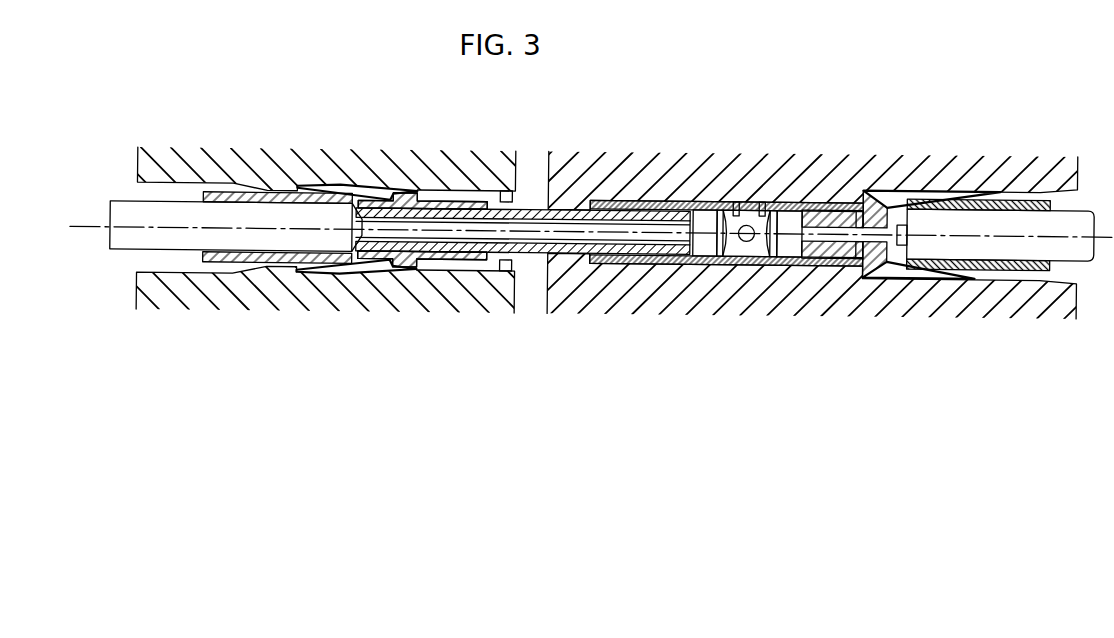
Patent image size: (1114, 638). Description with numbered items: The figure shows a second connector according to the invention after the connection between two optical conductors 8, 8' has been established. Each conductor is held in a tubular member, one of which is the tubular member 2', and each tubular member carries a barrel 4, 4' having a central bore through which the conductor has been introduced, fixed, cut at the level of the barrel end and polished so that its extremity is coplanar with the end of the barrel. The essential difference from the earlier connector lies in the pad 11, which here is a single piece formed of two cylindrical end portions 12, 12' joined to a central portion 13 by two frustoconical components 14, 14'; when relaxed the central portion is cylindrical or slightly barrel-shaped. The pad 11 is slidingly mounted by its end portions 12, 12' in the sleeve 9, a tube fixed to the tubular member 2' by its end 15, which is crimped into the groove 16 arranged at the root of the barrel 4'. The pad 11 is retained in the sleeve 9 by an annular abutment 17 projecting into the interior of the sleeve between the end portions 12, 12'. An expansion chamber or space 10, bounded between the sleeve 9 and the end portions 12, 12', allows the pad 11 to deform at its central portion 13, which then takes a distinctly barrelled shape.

The tubular member 2' is at (789, 276).
The barrel 4 is at (499, 297).
The barrel 4' is at (845, 296).
The optical conductor 8 is at (523, 305).
The optical conductor 8' is at (979, 174).
The sleeve 9 is at (632, 205).
The expansion chamber 10 is at (727, 245).
The pad 11 is at (772, 243).
The end portion 12 is at (682, 162).
The end portion 12' is at (813, 163).
The central portion 13 is at (735, 205).
The frustoconical component 14 is at (703, 306).
The frustoconical component 14' is at (791, 306).
The end of the sleeve 15 is at (860, 212).
The groove 16 is at (855, 248).
The annular abutment 17 is at (762, 205).